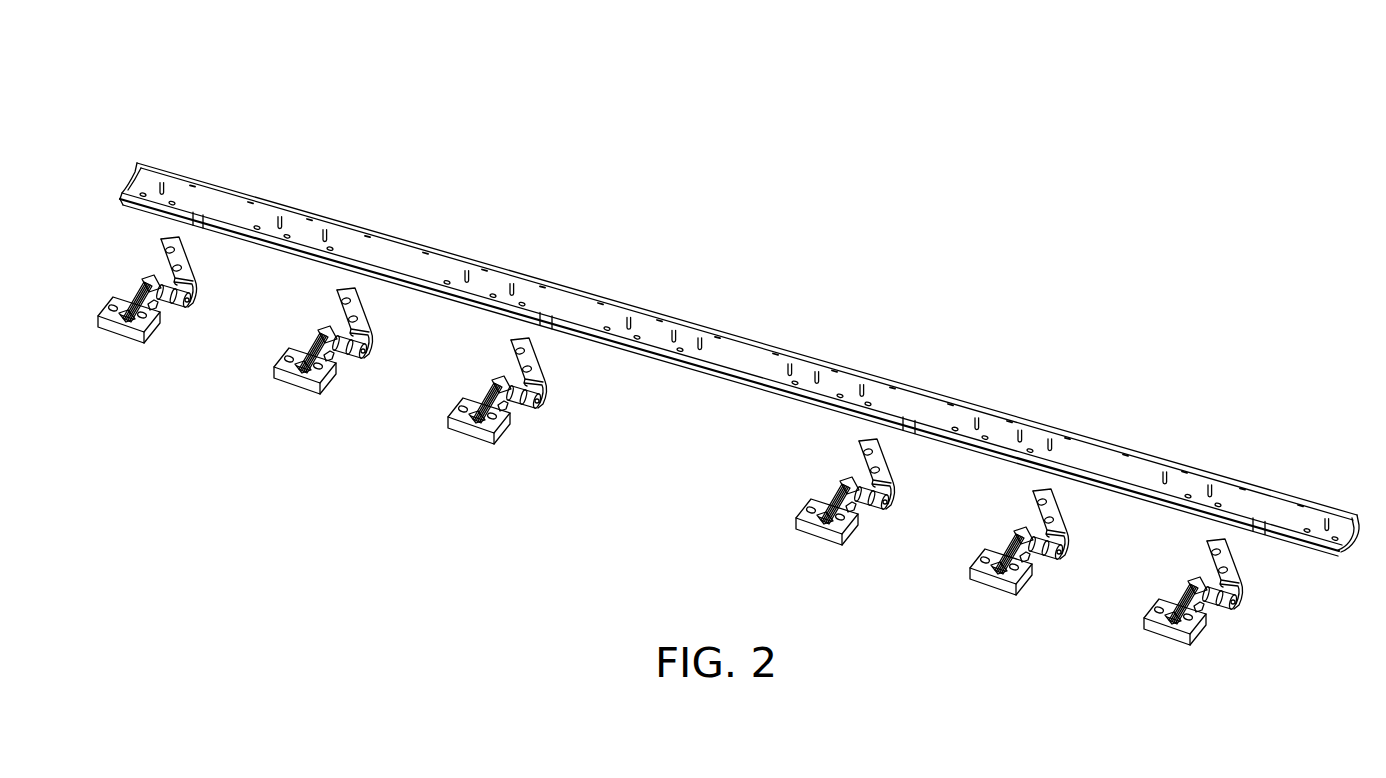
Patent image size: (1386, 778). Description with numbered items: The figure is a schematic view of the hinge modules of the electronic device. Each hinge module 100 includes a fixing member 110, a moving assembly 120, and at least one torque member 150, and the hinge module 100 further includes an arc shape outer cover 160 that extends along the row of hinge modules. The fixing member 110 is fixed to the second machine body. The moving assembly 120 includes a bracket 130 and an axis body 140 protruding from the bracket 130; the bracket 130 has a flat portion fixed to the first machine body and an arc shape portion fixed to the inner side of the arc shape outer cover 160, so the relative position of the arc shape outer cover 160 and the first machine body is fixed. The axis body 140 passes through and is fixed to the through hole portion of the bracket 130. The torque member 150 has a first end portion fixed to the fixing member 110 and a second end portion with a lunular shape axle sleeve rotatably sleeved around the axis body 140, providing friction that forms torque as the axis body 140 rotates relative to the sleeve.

The hinge module 100 is at (169, 104).
The fixing member 110 is at (299, 403).
The moving assembly 120 is at (376, 388).
The bracket 130 is at (377, 366).
The axis body 140 is at (352, 389).
The torque member 150 is at (295, 342).
The arc shape outer cover 160 is at (342, 221).